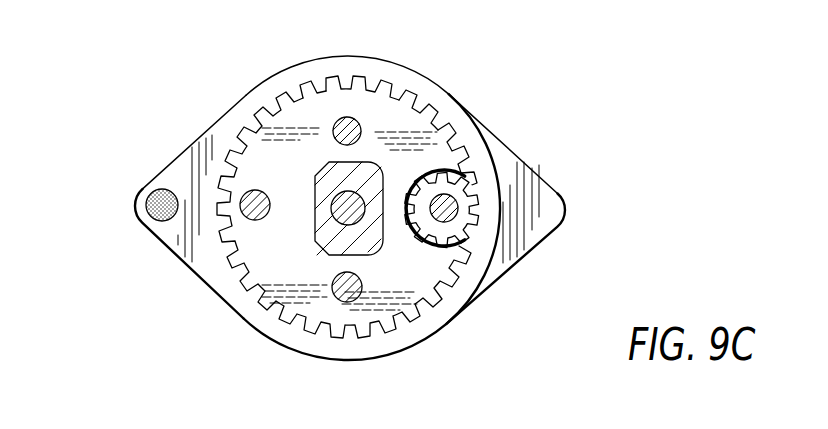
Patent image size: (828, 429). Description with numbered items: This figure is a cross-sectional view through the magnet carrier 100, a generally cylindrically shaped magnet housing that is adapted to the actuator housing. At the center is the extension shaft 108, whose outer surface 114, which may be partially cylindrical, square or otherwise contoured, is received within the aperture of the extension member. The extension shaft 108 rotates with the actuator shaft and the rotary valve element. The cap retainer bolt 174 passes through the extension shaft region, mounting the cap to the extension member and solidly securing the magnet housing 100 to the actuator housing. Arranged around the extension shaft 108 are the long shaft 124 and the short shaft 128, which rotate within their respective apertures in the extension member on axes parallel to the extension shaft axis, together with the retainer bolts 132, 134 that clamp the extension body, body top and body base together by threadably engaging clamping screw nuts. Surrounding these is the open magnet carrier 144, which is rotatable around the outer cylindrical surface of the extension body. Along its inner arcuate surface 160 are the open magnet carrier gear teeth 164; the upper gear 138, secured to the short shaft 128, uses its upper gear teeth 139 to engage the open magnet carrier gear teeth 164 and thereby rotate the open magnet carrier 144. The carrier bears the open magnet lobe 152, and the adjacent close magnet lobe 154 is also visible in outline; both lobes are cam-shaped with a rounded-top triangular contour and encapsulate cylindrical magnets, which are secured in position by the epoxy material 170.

The magnet carrier 100 is at (578, 85).
The extension shaft 108 is at (367, 230).
The outer surface 114 is at (303, 259).
The long shaft 124 is at (247, 196).
The short shaft 128 is at (449, 190).
The retainer bolt 132 is at (342, 300).
The retainer bolt 134 is at (350, 117).
The upper gear 138 is at (453, 233).
The upper gear teeth 139 is at (477, 206).
The open magnet carrier 144 is at (388, 340).
The open magnet lobe 152 is at (203, 262).
The close magnet lobe 154 is at (547, 217).
The inner arcuate surface 160 is at (310, 87).
The open magnet carrier gear teeth 164 is at (423, 110).
The epoxy material 170 is at (147, 208).
The cap retainer bolt 174 is at (340, 203).